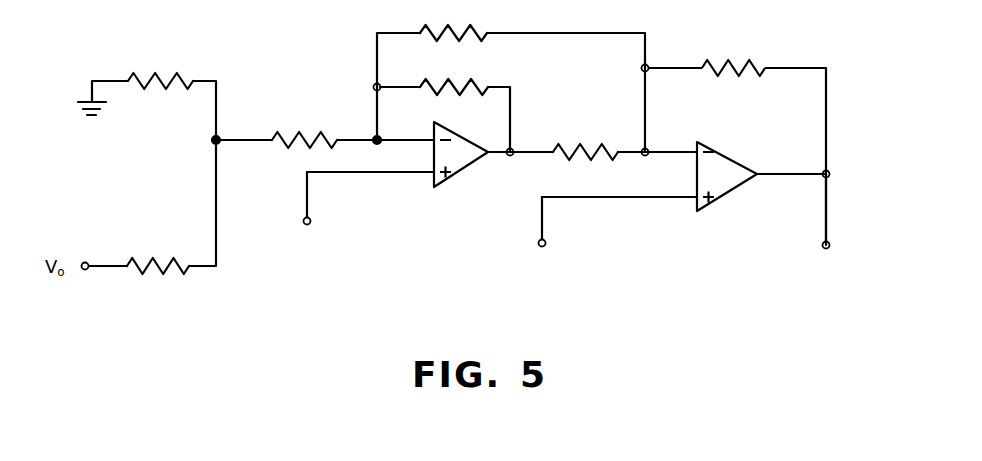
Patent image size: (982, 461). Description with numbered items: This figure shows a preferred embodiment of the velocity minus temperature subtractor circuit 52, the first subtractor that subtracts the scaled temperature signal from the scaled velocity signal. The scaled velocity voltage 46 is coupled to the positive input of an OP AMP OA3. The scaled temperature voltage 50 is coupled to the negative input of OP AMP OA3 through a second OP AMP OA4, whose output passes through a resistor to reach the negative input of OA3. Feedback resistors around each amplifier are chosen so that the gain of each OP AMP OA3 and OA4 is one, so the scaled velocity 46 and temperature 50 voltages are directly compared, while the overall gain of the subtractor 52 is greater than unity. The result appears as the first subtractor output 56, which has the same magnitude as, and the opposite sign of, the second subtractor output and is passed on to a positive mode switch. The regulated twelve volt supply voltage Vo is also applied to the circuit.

The scaled velocity signal 46 is at (545, 227).
The scaled temperature signal 50 is at (310, 200).
The first subtractor 52 is at (712, 27).
The first subtractor output 56 is at (829, 236).
The OP AMP OA3 is at (731, 193).
The OP AMP OA4 is at (461, 175).